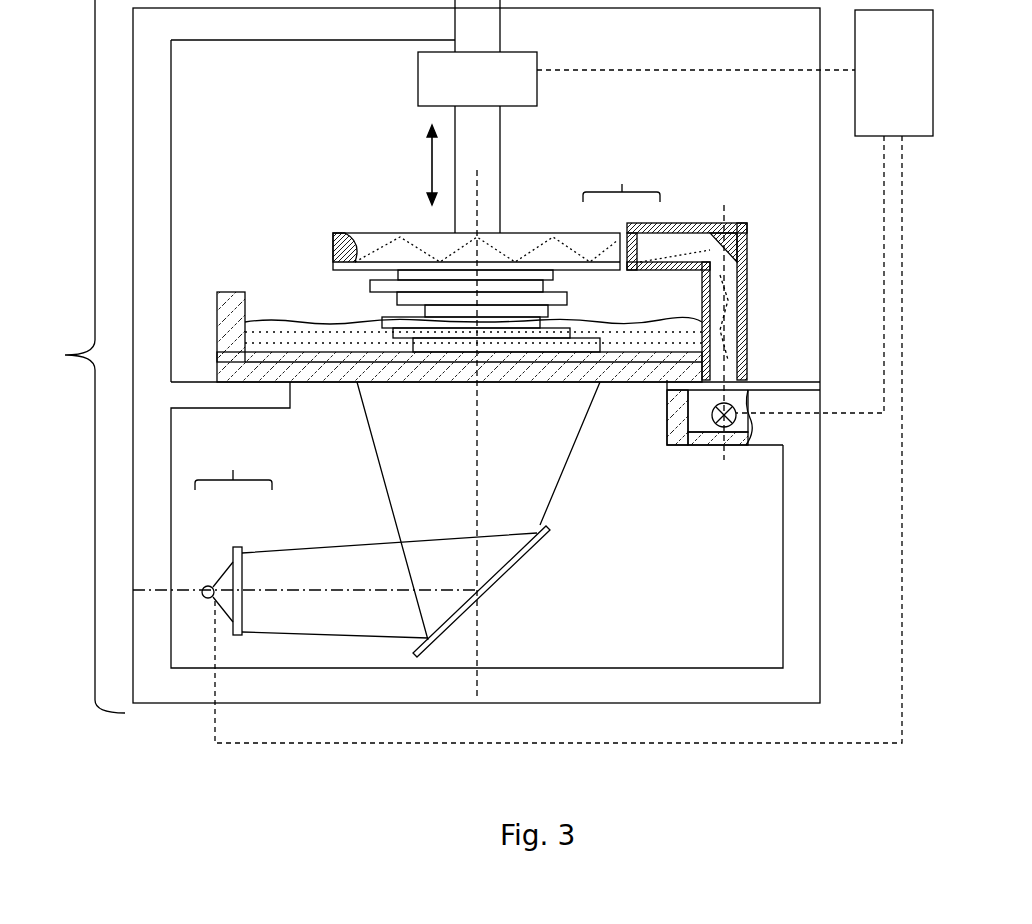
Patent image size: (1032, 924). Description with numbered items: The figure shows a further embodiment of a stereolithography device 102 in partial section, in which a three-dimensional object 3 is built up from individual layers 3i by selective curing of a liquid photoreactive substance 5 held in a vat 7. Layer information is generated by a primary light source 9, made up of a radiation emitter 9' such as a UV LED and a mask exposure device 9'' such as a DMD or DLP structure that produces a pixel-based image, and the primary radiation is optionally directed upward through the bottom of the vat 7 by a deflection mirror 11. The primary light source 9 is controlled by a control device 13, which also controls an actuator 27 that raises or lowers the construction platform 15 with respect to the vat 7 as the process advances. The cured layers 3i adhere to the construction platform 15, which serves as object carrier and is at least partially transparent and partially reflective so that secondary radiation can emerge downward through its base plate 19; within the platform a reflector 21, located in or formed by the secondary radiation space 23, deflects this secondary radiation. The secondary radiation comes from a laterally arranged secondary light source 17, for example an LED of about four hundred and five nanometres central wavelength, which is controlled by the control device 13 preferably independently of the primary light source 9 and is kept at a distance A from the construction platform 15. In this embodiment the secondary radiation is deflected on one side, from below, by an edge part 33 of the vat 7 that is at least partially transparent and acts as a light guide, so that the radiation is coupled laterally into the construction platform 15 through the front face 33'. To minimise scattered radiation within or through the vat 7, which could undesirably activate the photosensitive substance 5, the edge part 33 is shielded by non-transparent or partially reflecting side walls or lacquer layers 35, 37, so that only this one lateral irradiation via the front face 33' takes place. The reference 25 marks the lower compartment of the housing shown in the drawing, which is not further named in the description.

The stereolithography device 102 is at (71, 356).
The actuator 27 is at (492, 88).
The control device 13 is at (907, 88).
The projection compartment 25 is at (752, 646).
The vat 7 is at (220, 285).
The photoreactive substance 5 is at (637, 340).
The three-dimensional object 3 is at (355, 300).
The layer 3i is at (590, 345).
The secondary radiation space 23 is at (578, 261).
The reflector 21 is at (350, 235).
The base plate 19 is at (345, 265).
The construction platform 15 is at (385, 225).
The edge part 33 is at (687, 299).
The front face 33' is at (572, 199).
The distance A is at (621, 176).
The side wall 35 is at (745, 232).
The side wall 37 is at (706, 282).
The secondary light source 17 is at (718, 425).
The primary light source 9 is at (305, 513).
The radiation emitter 9' is at (204, 556).
The mask exposure device 9'' is at (375, 568).
The deflection mirror 11 is at (525, 557).